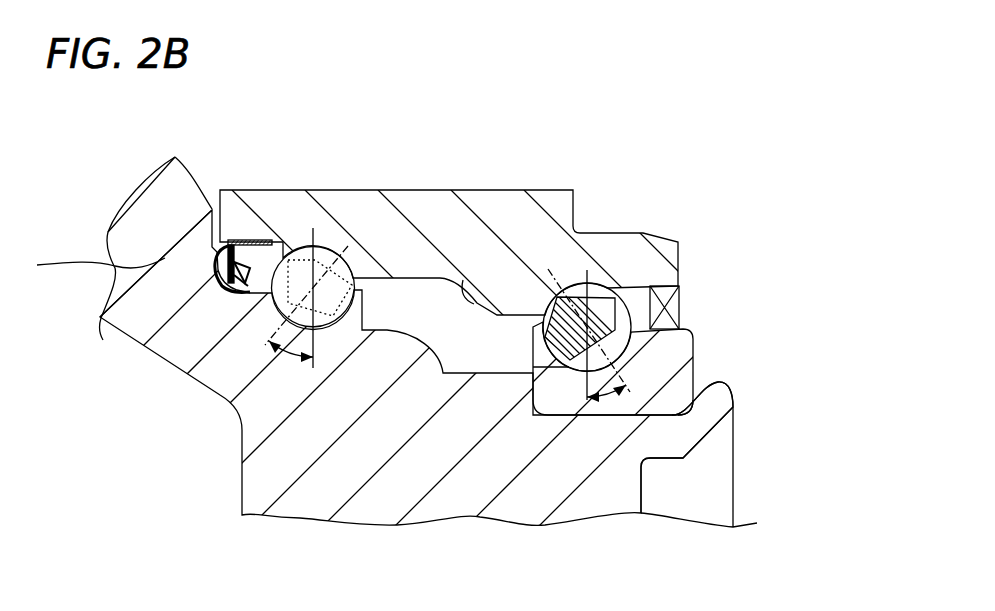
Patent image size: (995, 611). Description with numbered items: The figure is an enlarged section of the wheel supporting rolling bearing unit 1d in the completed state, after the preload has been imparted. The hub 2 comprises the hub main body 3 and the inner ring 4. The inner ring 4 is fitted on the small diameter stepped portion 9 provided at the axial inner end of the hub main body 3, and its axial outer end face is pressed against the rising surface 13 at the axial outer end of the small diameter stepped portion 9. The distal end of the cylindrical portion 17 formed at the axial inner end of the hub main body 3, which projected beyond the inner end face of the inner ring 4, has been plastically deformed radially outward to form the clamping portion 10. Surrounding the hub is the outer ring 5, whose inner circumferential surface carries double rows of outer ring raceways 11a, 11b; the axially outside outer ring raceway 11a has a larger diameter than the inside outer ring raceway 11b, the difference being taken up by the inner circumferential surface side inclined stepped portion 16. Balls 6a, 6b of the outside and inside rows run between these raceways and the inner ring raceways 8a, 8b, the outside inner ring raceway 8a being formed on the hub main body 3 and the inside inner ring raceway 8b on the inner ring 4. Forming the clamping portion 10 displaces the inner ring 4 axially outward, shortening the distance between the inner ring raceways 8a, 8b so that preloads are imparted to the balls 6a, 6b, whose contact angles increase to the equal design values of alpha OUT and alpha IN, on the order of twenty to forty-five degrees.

The wheel supporting rolling bearing unit 1d is at (88, 222).
The hub 2 is at (267, 473).
The hub main body 3 is at (115, 237).
The inner ring 4 is at (675, 365).
The outer ring 5 is at (500, 202).
The rolling element 6a is at (307, 256).
The rolling element 6b is at (640, 315).
The inner ring raceway 8a is at (267, 342).
The inner ring raceway 8b is at (628, 388).
The small diameter stepped portion 9 is at (680, 403).
The clamping portion 10 is at (717, 385).
The outer ring raceway 11a is at (345, 257).
The outer ring raceway 11b is at (611, 284).
The rising surface 13 is at (570, 393).
The inner circumferential surface side inclined stepped portion 16 is at (480, 302).
The cylindrical portion 17 is at (672, 442).